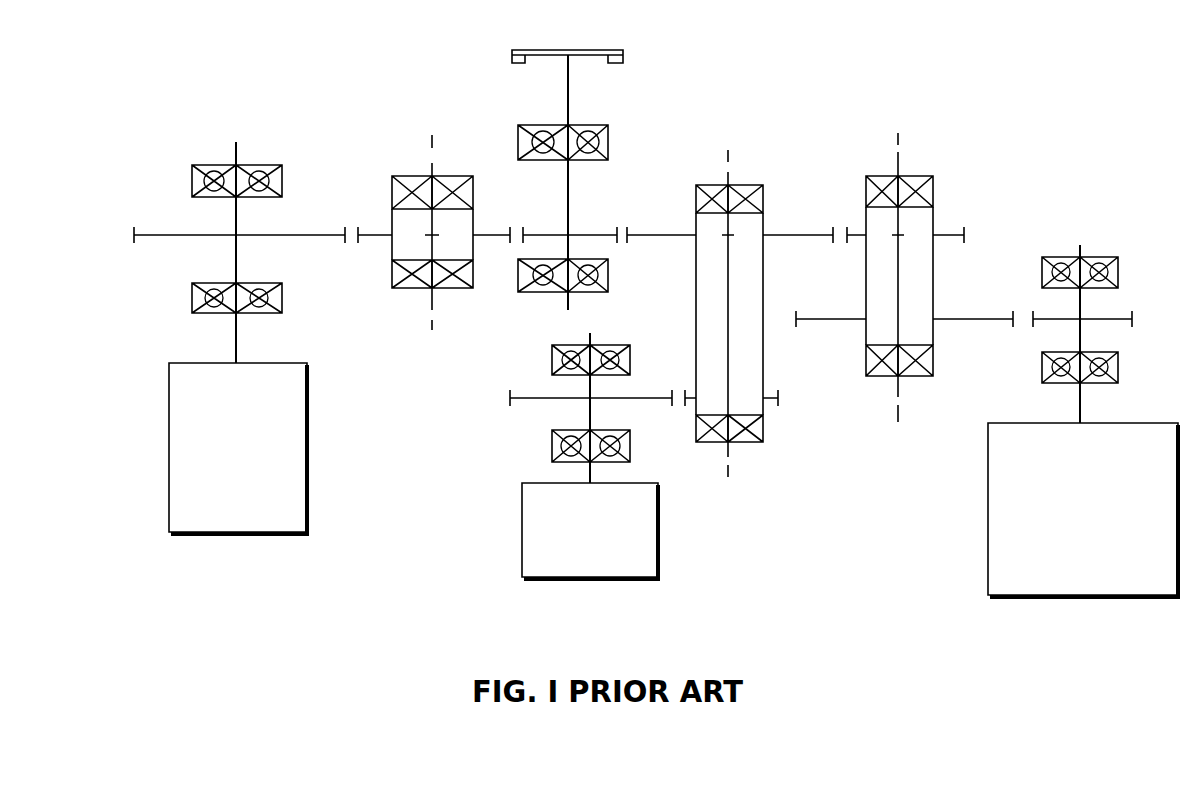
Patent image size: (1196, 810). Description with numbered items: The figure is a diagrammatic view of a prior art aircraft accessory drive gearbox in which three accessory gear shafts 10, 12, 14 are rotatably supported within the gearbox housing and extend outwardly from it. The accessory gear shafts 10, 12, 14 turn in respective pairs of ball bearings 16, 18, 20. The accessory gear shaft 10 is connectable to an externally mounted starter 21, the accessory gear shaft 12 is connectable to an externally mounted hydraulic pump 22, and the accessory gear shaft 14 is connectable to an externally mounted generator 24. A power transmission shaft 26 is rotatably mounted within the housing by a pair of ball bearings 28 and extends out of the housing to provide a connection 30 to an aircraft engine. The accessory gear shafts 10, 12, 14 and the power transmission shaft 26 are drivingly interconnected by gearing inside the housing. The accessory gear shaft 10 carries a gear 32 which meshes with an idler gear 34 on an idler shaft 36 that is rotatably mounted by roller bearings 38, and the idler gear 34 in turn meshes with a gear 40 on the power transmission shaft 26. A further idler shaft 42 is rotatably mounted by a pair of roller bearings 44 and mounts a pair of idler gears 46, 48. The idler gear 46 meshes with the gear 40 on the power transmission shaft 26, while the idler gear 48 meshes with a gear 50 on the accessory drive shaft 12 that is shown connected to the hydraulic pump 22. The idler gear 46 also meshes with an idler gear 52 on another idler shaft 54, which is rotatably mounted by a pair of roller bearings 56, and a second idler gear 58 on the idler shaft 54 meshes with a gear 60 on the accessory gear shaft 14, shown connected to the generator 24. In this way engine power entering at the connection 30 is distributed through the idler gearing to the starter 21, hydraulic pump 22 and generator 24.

The accessory gear shaft 10 is at (236, 335).
The accessory gear shaft 12 is at (590, 405).
The accessory gear shaft 14 is at (1082, 406).
The ball bearings 16 is at (192, 295).
The ball bearings 18 is at (552, 360).
The ball bearings 20 is at (1042, 365).
The starter 21 is at (176, 476).
The hydraulic pump 22 is at (658, 570).
The generator 24 is at (988, 508).
The power transmission shaft 26 is at (568, 100).
The ball bearings 28 is at (608, 143).
The connection 30 is at (608, 48).
The gear 32 is at (283, 235).
The idler gear 34 is at (378, 238).
The idler shaft 36 is at (432, 222).
The roller bearings 38 is at (395, 177).
The gear 40 is at (588, 233).
The idler shaft 42 is at (730, 295).
The roller bearings 44 is at (758, 193).
The idler gear 46 is at (652, 233).
The idler gear 48 is at (770, 400).
The gear 50 is at (650, 403).
The idler gear 52 is at (950, 232).
The idler shaft 54 is at (900, 162).
The roller bearings 56 is at (912, 378).
The second idler gear 58 is at (962, 316).
The gear 60 is at (1107, 322).